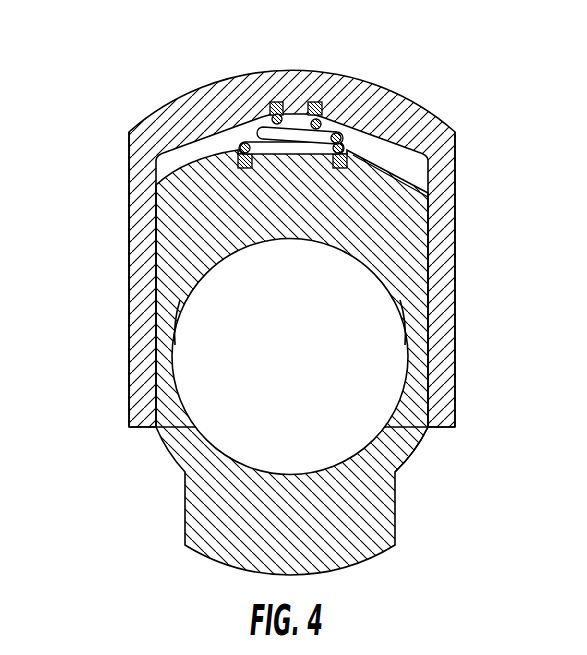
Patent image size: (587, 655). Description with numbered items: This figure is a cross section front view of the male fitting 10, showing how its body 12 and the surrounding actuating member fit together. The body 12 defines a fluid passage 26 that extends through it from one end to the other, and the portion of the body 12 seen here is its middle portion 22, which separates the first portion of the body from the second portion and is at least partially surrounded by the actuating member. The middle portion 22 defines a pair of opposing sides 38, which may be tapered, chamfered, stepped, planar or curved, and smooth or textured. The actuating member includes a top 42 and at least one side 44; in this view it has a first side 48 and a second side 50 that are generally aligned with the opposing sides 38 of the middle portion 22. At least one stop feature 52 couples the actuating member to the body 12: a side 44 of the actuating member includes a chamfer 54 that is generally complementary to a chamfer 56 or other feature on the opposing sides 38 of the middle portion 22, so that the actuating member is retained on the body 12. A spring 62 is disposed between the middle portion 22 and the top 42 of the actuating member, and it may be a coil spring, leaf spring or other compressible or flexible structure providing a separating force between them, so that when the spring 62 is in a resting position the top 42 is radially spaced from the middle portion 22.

The male fitting 10 is at (132, 78).
The body 12 is at (197, 472).
The middle portion 22 is at (418, 202).
The fluid passage 26 is at (277, 384).
The opposing sides 38 is at (160, 331).
The top 42 is at (355, 92).
The side 44 is at (128, 262).
The first side 48 is at (447, 320).
The second side 50 is at (140, 292).
The stop feature 52 is at (147, 436).
The chamfer 54 is at (432, 431).
The chamfer 56 is at (412, 452).
The spring 62 is at (352, 126).